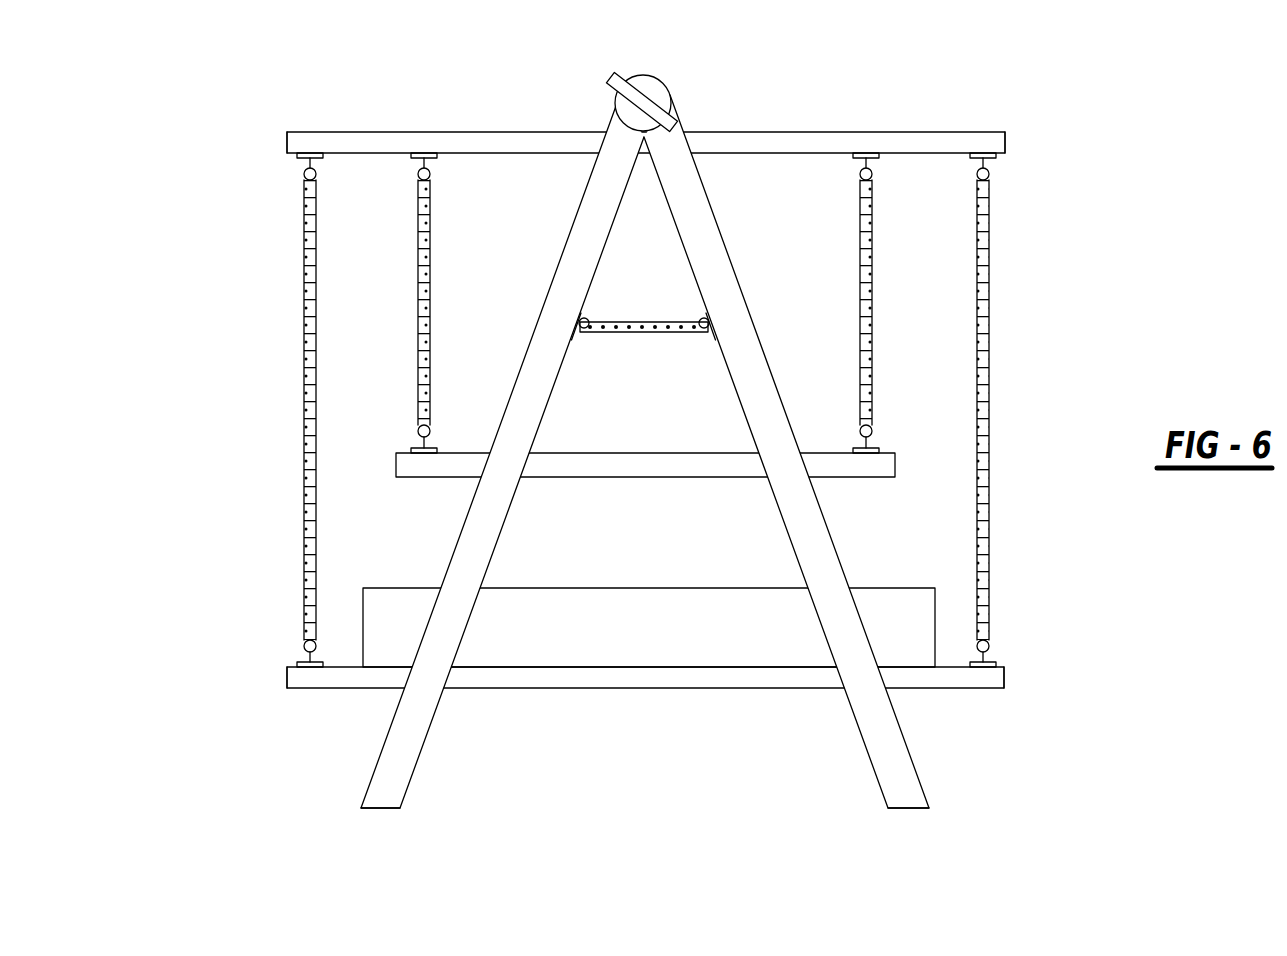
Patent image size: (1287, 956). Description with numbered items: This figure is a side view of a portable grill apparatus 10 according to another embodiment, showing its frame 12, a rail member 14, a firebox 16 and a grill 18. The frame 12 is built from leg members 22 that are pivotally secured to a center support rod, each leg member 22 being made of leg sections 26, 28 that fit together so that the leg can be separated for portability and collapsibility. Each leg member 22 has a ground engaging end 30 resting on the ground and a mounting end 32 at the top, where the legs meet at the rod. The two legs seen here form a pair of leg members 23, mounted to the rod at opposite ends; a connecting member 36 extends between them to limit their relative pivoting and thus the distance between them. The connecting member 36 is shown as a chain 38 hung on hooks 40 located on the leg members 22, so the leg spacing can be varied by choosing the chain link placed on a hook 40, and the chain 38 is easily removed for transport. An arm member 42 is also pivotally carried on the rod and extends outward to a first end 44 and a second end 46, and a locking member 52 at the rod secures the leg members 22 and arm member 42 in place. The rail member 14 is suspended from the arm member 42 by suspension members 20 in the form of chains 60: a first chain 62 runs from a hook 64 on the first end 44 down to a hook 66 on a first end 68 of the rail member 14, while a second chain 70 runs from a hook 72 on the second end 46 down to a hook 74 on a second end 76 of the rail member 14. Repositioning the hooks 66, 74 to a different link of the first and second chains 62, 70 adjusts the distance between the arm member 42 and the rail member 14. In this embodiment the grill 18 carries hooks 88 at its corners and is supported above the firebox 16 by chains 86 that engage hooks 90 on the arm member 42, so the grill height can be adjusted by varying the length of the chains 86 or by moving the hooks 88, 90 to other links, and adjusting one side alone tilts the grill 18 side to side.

The portable grill apparatus 10 is at (903, 103).
The frame 12 is at (688, 122).
The rail member 14 is at (322, 676).
The firebox 16 is at (902, 624).
The grill 18 is at (882, 465).
The suspension member 20 is at (273, 503).
The leg member 22 is at (420, 750).
The pair of leg members 23 is at (557, 372).
The leg section 26 is at (585, 232).
The leg section 28 is at (482, 520).
The ground engaging end 30 is at (378, 808).
The mounting end 32 is at (622, 145).
The connecting member 36 is at (655, 316).
The chain 38 is at (637, 332).
The hook 40 is at (586, 332).
The arm member 42 is at (426, 125).
The first end 44 is at (292, 150).
The second end 46 is at (998, 147).
The locking member 52 is at (652, 90).
The chain 60 is at (301, 376).
The first chain 62 is at (305, 247).
The hook 64 is at (313, 173).
The hook 66 is at (320, 640).
The first end 68 is at (295, 677).
The second chain 70 is at (985, 220).
The hook 72 is at (968, 170).
The hook 74 is at (988, 656).
The second end 76 is at (992, 678).
The chain 86 is at (420, 304).
The hook 88 is at (433, 436).
The hook 90 is at (432, 162).